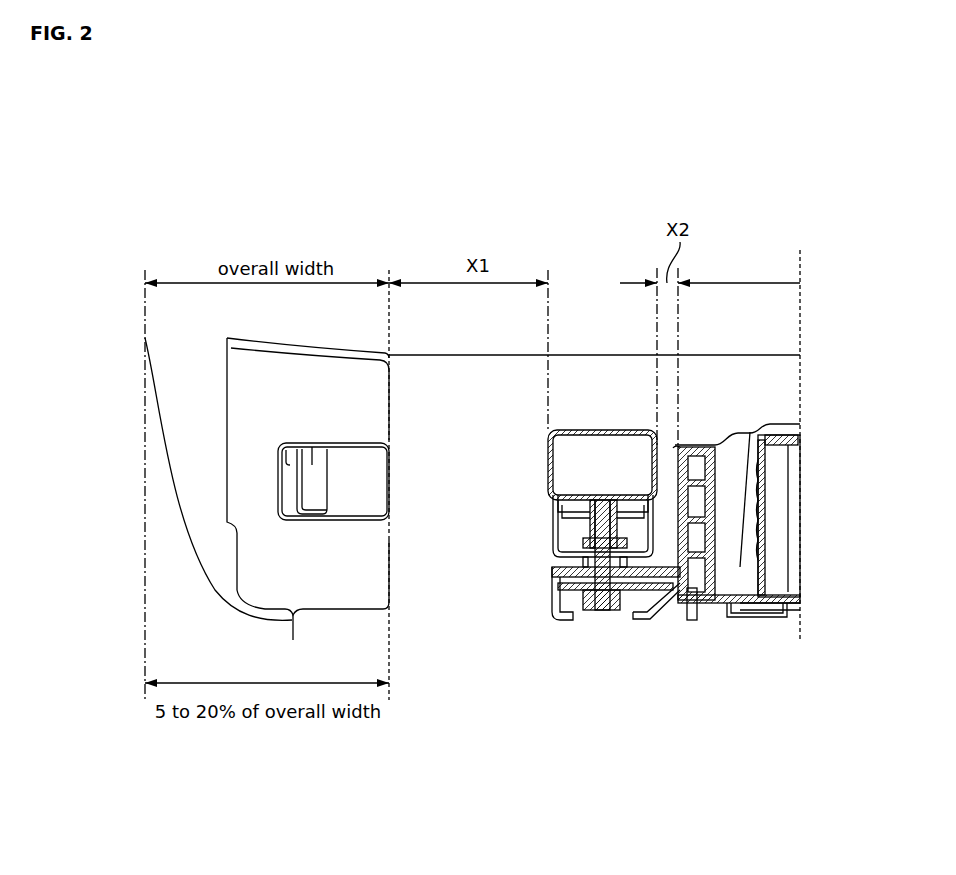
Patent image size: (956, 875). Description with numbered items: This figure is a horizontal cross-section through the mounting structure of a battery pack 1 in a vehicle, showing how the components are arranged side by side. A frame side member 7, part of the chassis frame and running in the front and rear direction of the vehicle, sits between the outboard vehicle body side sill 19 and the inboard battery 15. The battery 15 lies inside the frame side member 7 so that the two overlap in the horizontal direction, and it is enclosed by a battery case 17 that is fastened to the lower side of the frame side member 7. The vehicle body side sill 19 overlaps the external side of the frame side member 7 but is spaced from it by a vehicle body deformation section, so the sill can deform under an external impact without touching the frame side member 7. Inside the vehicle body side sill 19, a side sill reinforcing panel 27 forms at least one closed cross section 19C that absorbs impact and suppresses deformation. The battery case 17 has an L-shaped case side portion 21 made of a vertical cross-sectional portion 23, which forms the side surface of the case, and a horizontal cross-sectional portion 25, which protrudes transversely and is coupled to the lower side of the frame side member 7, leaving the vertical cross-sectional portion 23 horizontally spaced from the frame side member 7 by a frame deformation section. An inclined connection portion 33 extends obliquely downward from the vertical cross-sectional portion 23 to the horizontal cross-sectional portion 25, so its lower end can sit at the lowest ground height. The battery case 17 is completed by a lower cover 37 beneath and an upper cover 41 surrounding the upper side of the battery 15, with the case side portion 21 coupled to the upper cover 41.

The battery pack 1 is at (792, 622).
The frame side member 7 is at (590, 430).
The battery 15 is at (794, 545).
The battery case 17 is at (791, 773).
The vehicle body side sill 19 is at (237, 555).
The closed cross section 19C is at (312, 447).
The case side portion 21 is at (699, 730).
The vertical cross-sectional portion 23 is at (717, 542).
The horizontal cross-sectional portion 25 is at (555, 622).
The side sill reinforcing panel 27 is at (323, 503).
The inclined connection portion 33 is at (660, 613).
The lower cover 37 is at (772, 605).
The upper cover 41 is at (740, 567).